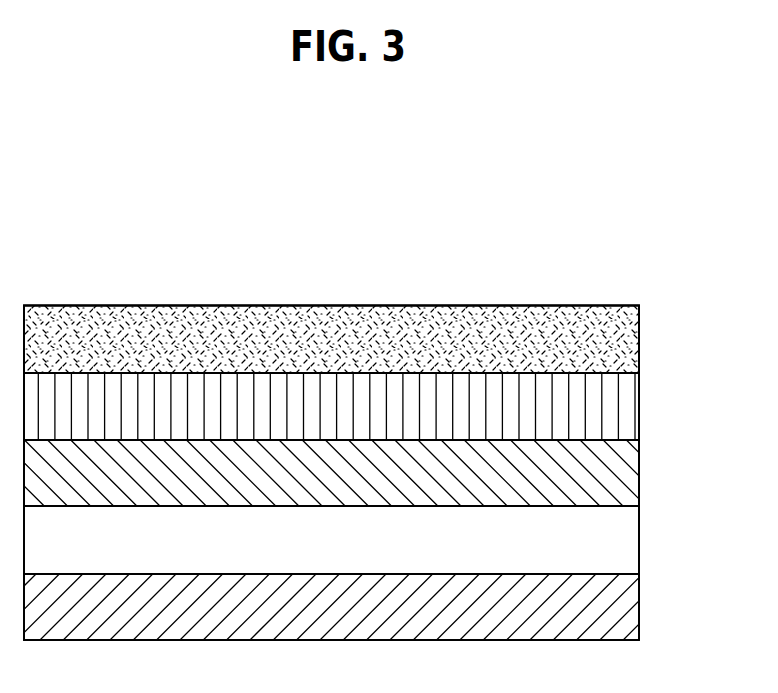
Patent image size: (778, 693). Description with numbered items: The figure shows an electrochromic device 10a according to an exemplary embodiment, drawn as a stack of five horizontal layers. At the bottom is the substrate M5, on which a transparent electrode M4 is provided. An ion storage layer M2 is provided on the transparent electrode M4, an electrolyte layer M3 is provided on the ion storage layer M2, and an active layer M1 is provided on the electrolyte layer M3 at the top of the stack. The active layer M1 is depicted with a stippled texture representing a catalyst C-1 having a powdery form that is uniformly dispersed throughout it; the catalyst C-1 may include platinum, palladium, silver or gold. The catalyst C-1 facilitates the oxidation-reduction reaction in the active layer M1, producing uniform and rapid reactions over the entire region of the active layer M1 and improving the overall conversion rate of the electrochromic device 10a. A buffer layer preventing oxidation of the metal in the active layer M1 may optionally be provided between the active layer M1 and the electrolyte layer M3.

The electrochromic device 10a is at (83, 237).
The active layer M1 is at (639, 338).
The ion storage layer M2 is at (639, 470).
The electrolyte layer M3 is at (639, 405).
The transparent electrode M4 is at (639, 538).
The substrate M5 is at (639, 605).
The catalyst C-1 is at (548, 320).